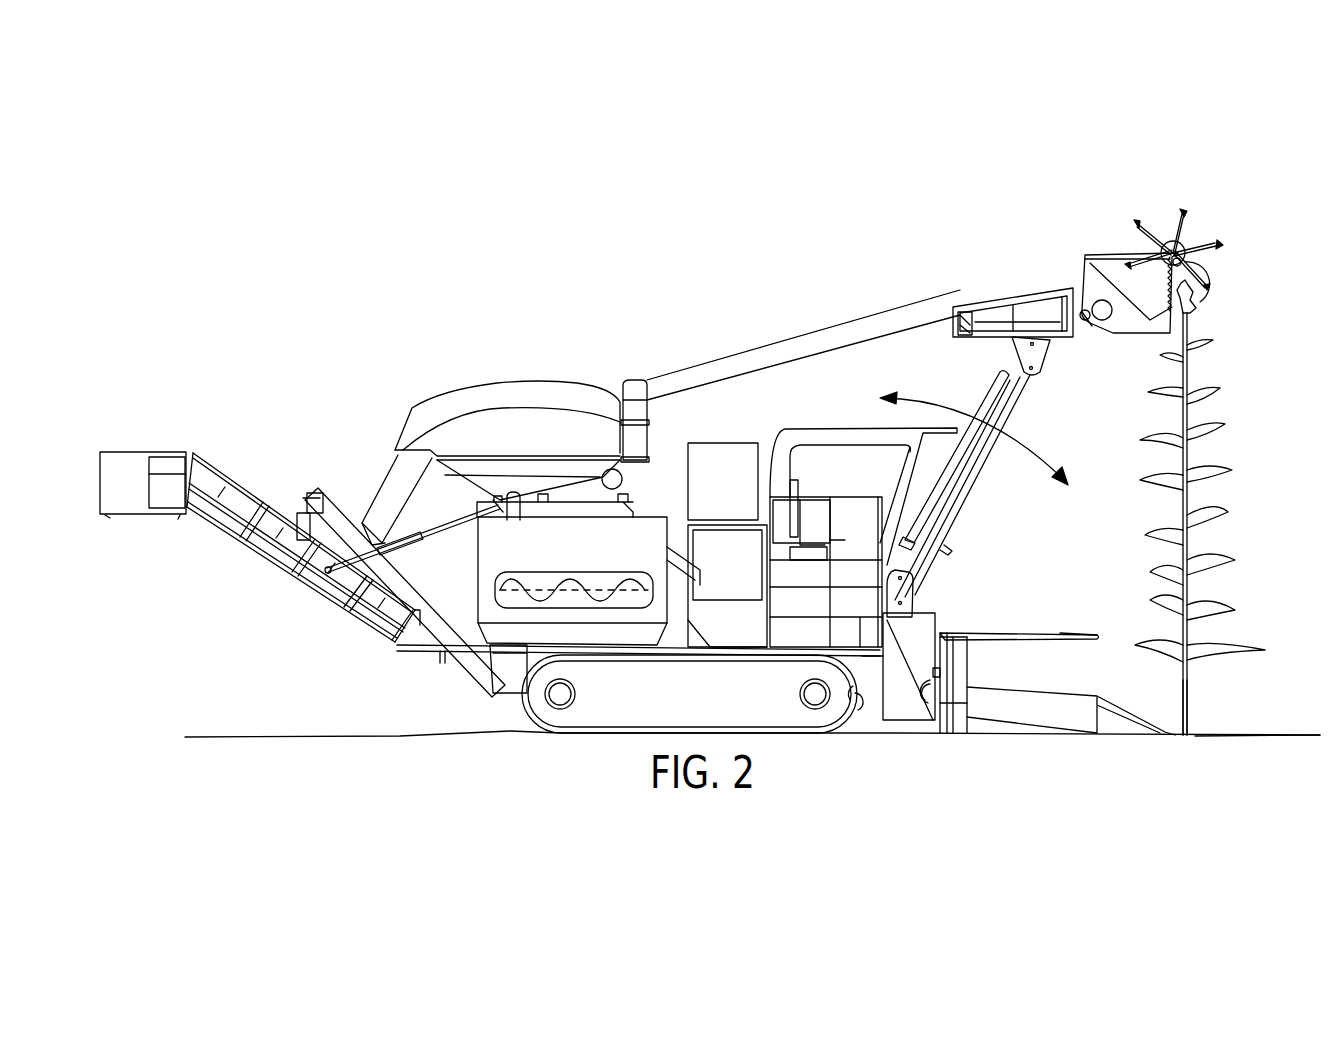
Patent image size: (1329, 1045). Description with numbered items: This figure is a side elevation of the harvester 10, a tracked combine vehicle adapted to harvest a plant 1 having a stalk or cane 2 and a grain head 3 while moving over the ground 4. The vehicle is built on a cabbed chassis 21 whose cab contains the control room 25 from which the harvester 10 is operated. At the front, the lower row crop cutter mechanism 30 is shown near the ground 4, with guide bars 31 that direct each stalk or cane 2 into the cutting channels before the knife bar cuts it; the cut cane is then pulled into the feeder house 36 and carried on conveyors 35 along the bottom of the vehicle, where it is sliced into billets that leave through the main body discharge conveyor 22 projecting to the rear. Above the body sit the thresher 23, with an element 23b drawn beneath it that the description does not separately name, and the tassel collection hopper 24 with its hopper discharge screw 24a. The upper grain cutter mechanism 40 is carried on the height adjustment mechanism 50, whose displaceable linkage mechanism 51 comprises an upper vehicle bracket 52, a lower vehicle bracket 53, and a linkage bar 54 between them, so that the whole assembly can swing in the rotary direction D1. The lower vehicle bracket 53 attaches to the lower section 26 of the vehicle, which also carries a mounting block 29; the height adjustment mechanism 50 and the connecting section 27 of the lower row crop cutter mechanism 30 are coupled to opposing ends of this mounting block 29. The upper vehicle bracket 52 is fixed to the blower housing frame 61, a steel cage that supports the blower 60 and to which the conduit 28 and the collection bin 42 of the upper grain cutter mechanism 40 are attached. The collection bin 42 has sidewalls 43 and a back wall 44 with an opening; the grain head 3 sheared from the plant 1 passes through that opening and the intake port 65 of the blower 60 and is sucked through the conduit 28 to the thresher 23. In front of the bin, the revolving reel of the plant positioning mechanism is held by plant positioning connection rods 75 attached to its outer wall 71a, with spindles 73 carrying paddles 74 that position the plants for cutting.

The harvester 10 is at (674, 326).
The main body discharge conveyor 22 is at (234, 500).
The thresher 23 is at (532, 386).
The hopper support leg 23b is at (372, 487).
The tassel collection hopper 24 is at (487, 550).
The hopper discharge screw 24a is at (514, 590).
The control room 25 is at (897, 490).
The cabbed chassis 21 is at (815, 432).
The lower section 26 is at (890, 614).
The connecting section 27 is at (945, 733).
The conduit 28 is at (742, 355).
The mounting block 29 is at (902, 703).
The lower row crop cutter mechanism 30 is at (1073, 738).
The guide bars 31 is at (1093, 633).
The conveyors 35 is at (935, 686).
The feeder house 36 is at (850, 665).
The upper grain cutter mechanism 40 is at (1120, 212).
The collection bin 42 is at (1152, 336).
The sidewalls 43 is at (1092, 268).
The back wall 44 is at (1085, 256).
The height adjustment mechanism 50 is at (1020, 400).
The displaceable linkage mechanism 51 is at (963, 518).
The upper vehicle bracket 52 is at (1040, 350).
The lower vehicle bracket 53 is at (905, 596).
The linkage bar 54 is at (985, 478).
The blower 60 is at (1040, 318).
The blower housing frame 61 is at (968, 305).
The intake port 65 is at (978, 343).
The outer wall 71a is at (1200, 243).
The spindles 73 is at (1182, 225).
The paddles 74 is at (1180, 218).
The plant positioning connection rods 75 is at (1152, 235).
The grain head 3 is at (1200, 308).
The plant 1 is at (1195, 370).
The stalk or cane 2 is at (1192, 690).
The ground 4 is at (1225, 740).
The rotary direction D1 is at (991, 450).